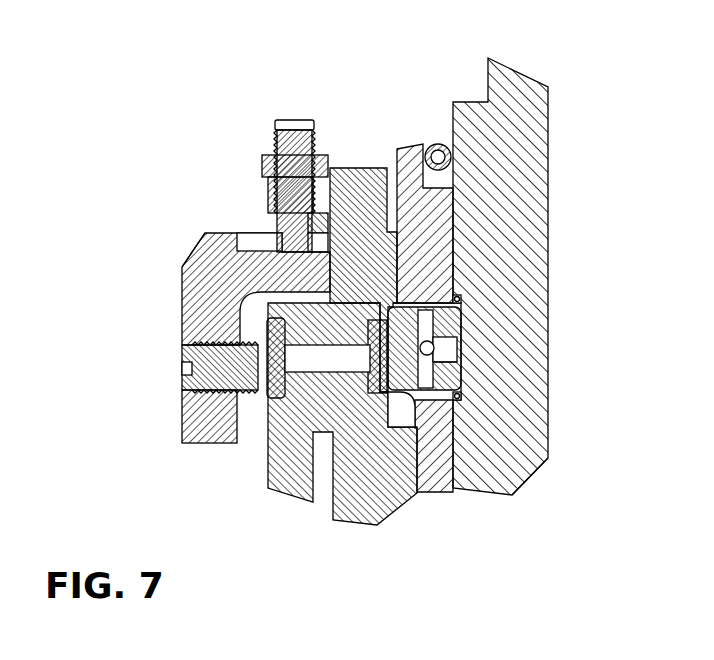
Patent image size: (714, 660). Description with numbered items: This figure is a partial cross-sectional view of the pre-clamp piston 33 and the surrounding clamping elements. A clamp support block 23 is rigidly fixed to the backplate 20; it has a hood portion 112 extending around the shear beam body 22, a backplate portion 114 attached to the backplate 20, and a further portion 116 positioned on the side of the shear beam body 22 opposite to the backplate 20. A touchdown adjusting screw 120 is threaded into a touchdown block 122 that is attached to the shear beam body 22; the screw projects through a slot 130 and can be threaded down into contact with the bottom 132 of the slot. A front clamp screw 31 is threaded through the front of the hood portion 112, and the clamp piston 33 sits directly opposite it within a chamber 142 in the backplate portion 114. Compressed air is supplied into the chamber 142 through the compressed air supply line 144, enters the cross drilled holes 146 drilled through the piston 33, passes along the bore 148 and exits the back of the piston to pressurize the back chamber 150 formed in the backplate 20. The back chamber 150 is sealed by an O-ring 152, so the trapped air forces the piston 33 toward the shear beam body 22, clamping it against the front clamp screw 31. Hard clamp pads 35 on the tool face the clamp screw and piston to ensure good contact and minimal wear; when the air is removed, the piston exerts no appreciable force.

The backplate 20 is at (548, 165).
The shear beam body 22 is at (270, 480).
The clamp support block 23 is at (180, 267).
The front clamp screw 31 is at (210, 352).
The clamp piston 33 is at (403, 303).
The clamp pads 35 is at (265, 314).
The hood portion 112 is at (182, 267).
The backplate portion 114 is at (433, 478).
The portion of the clamp support block 116 is at (182, 431).
The touchdown adjusting screw 120 is at (295, 117).
The touchdown block 122 is at (357, 166).
The slot 130 is at (248, 233).
The bottom of slot 132 is at (263, 246).
The chamber 142 is at (462, 313).
The compressed air supply line 144 is at (437, 144).
The cross drilled holes 146 is at (459, 297).
The bore 148 is at (460, 340).
The back chamber 150 is at (447, 348).
The O-ring 152 is at (545, 459).